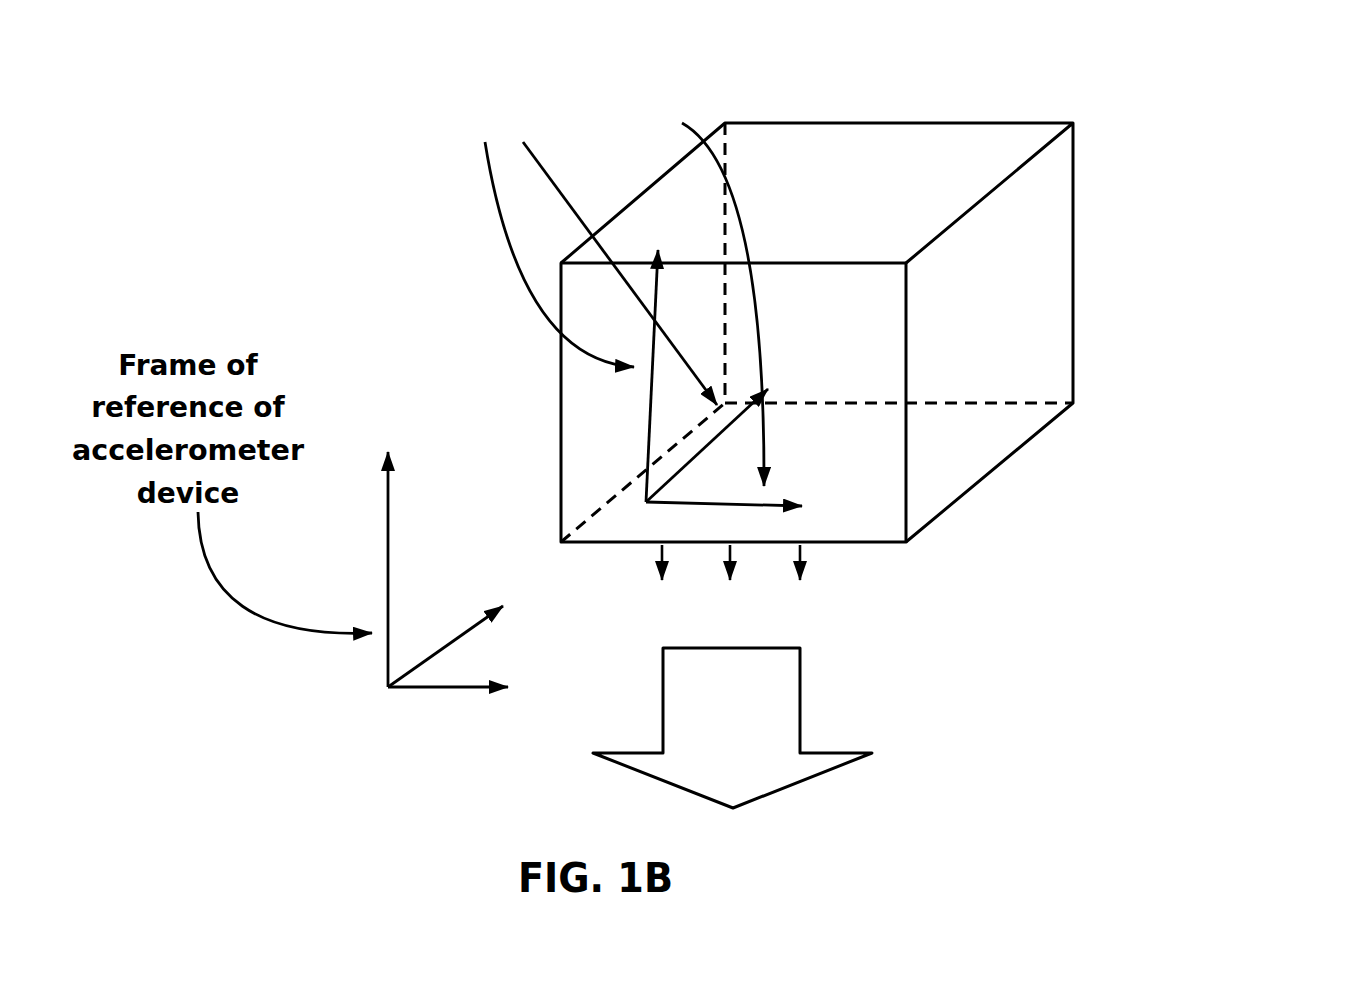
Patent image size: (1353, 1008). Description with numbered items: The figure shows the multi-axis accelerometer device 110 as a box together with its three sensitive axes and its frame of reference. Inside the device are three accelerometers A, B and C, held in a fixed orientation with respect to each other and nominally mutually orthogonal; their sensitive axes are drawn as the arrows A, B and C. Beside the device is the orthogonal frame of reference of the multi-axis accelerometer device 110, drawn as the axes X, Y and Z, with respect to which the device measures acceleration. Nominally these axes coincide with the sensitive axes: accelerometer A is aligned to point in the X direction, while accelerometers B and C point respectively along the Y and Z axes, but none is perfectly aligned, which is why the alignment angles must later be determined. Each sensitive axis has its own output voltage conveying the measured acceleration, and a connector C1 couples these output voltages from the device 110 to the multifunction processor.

The multi-axis accelerometer device 110 is at (878, 420).
The accelerometer A / sensitive axis A is at (746, 510).
The accelerometer B / sensitive axis B is at (720, 425).
The accelerometer C / sensitive axis C is at (659, 353).
The connector C1 is at (732, 728).
The X axis of the frame of reference X is at (473, 685).
The Y axis of the frame of reference Y is at (464, 624).
The Z axis of the frame of reference Z is at (387, 546).